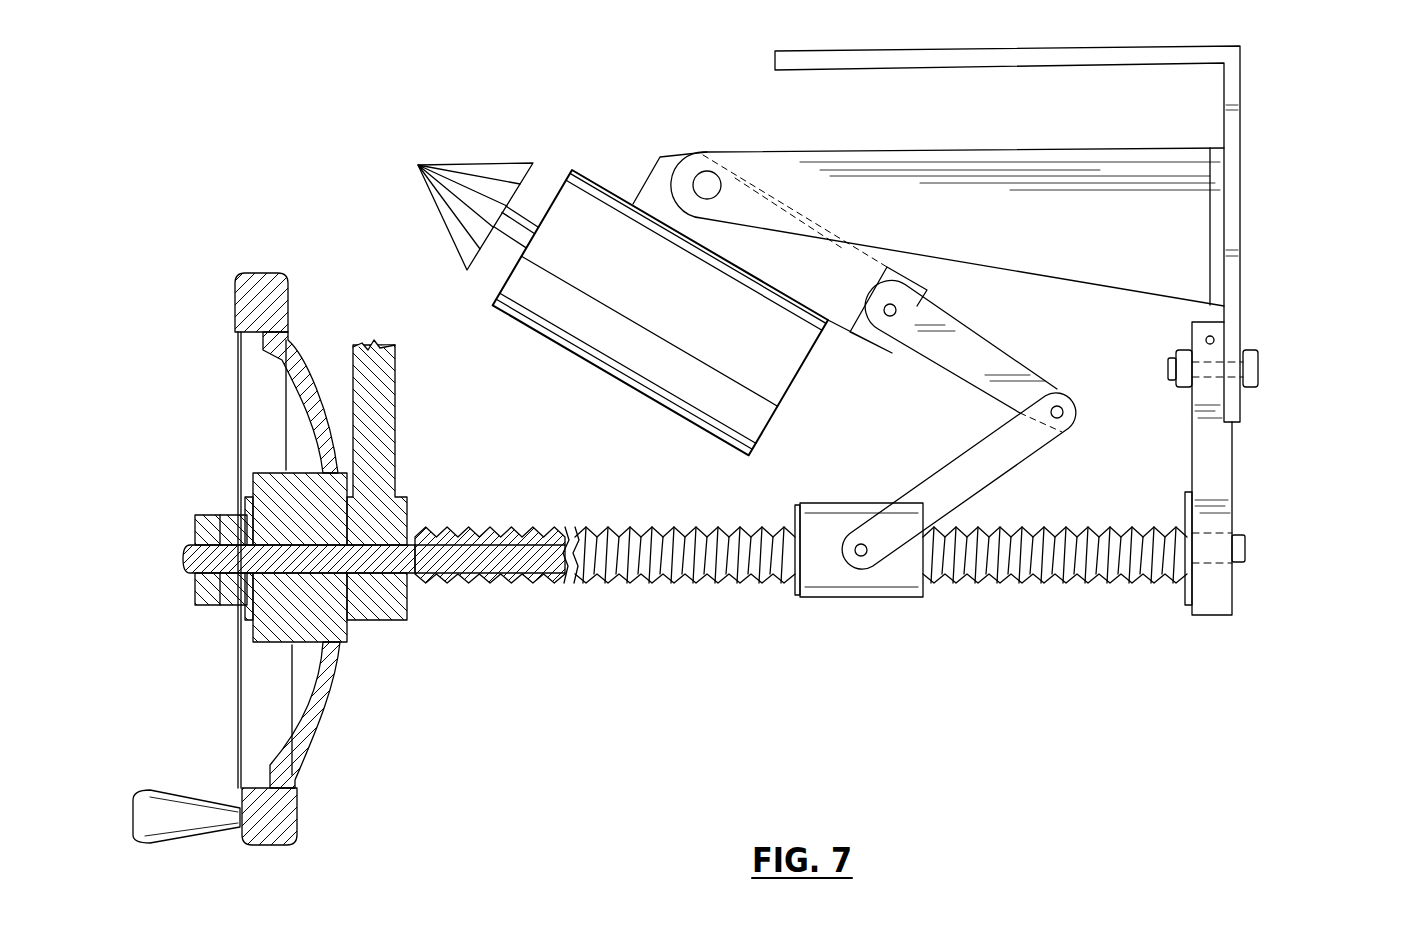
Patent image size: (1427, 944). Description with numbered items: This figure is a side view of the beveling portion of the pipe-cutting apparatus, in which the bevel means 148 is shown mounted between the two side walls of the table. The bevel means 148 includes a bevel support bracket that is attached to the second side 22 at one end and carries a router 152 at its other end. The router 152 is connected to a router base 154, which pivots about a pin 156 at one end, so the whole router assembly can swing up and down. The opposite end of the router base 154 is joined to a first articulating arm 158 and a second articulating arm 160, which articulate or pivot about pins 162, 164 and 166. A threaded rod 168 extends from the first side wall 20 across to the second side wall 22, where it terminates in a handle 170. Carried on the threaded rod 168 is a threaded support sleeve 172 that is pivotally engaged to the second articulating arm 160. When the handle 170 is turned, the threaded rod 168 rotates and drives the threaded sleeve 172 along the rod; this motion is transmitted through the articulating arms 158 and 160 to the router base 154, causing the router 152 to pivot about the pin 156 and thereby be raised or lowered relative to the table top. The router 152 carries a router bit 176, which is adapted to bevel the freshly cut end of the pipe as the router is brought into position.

The side 20 is at (1212, 492).
The side 22 is at (407, 588).
The bevel means 148 is at (1283, 242).
The router 152 is at (748, 375).
The router base 154 is at (817, 282).
The pin 156 is at (712, 185).
The first articulating arm 158 is at (957, 350).
The second articulating arm 160 is at (995, 465).
The pin 162 is at (897, 302).
The pin 164 is at (1064, 410).
The pin 166 is at (861, 557).
The threaded rod 168 is at (680, 567).
The handle 170 is at (322, 727).
The threaded support sleeve 172 is at (812, 498).
The router bit 176 is at (477, 177).